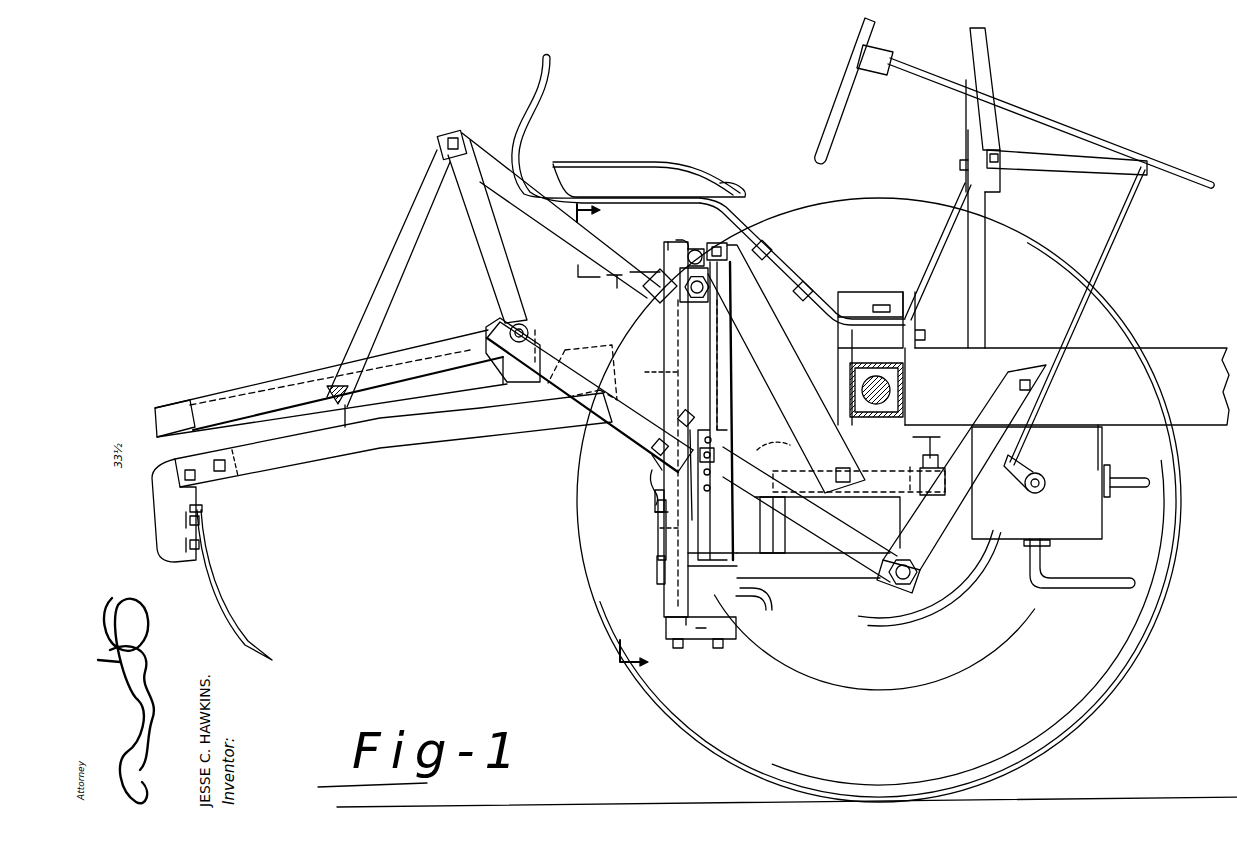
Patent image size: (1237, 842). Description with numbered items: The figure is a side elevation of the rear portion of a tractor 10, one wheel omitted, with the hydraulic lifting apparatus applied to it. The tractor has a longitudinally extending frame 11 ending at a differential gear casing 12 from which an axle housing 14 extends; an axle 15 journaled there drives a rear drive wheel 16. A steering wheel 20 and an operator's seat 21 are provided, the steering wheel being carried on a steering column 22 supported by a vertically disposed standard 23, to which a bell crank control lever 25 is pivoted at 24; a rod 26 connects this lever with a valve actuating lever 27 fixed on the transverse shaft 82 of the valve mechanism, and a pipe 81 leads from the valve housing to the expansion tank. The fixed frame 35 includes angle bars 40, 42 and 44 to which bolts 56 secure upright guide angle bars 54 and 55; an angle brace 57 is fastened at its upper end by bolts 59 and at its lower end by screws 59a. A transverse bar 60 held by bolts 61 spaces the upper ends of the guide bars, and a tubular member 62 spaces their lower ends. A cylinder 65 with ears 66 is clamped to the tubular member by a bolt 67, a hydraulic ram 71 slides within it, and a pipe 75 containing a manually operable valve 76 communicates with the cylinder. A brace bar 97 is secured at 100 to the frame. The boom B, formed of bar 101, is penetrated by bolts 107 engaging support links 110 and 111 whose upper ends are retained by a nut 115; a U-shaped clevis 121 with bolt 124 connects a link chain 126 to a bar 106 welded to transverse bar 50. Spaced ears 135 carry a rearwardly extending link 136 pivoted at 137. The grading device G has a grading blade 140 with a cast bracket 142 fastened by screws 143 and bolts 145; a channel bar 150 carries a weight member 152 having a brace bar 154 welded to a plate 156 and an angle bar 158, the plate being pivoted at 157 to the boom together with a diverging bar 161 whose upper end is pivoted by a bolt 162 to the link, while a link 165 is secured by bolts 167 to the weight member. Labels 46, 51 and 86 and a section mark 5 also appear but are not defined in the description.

The tractor 10 is at (1197, 350).
The longitudinally extending frame 11 is at (1124, 430).
The differential gear casing 12 is at (876, 290).
The transverse axle housing 14 is at (903, 402).
The axle 15 is at (890, 386).
The rear drive wheel 16 is at (1130, 664).
The steering wheel 20 is at (840, 90).
The operator's seat 21 is at (634, 170).
The steering column 22 is at (1046, 118).
The vertically disposed standard 23 is at (985, 270).
The pivot 24 is at (1000, 150).
The bell crank control lever 25 is at (990, 52).
The rod 26 is at (1104, 260).
The valve actuating lever 27 is at (1045, 483).
The frame 35 is at (834, 578).
The angle bar 40 is at (848, 494).
The angle bar 42 is at (878, 532).
The angle bar 44 is at (818, 550).
The guide bar 46 is at (657, 540).
The transverse bar 50 is at (654, 511).
The bracket 51 is at (656, 566).
The angle bar 54 is at (664, 338).
The angle bar 55 is at (735, 338).
The bolts 56 is at (692, 510).
The angle brace 57 is at (770, 322).
The bolts 59 is at (718, 260).
The screws 59a is at (846, 466).
The transverse bar 60 is at (695, 249).
The bolts 61 is at (674, 252).
The tubular member 62 is at (704, 640).
The cylinder 65 is at (650, 525).
The ears 66 is at (678, 648).
The bolt 67 is at (722, 648).
The hydraulic ram 71 is at (654, 372).
The pipe 75 is at (765, 598).
The manually operable valve 76 is at (934, 436).
The pipe 81 is at (1128, 492).
The transverse shaft 82 is at (1040, 474).
The pipe 86 is at (1078, 590).
The brace bar 97 is at (958, 506).
The securing point 100 is at (1022, 380).
The bar 101 is at (634, 418).
The horizontally disposed bar 106 is at (654, 498).
The bolts 107 is at (718, 455).
The support bar 110 is at (725, 404).
The support bar 111 is at (740, 564).
The nut 115 is at (709, 284).
The U-shaped clevis 121 is at (680, 418).
The bolt 124 is at (650, 458).
The link chain 126 is at (648, 478).
The spaced ears 135 is at (648, 296).
The rearwardly extending link 136 is at (547, 224).
The pivot 137 is at (636, 262).
The grading blade 140 is at (226, 590).
The cast bracket 142 is at (156, 516).
The screws 143 is at (202, 546).
The bolts 145 is at (219, 472).
The channel bar 150 is at (583, 394).
The weight member 152 is at (164, 404).
The brace bar 154 is at (276, 382).
The plate 156 is at (486, 330).
The pivot 157 is at (530, 331).
The angle bar 158 is at (500, 375).
The diverging bar 161 is at (512, 284).
The bolt 162 is at (452, 135).
The link 165 is at (385, 308).
The bolts 167 is at (345, 426).
The section line 5 is at (620, 438).
The grading assembly device G is at (418, 440).
The boom B is at (756, 500).